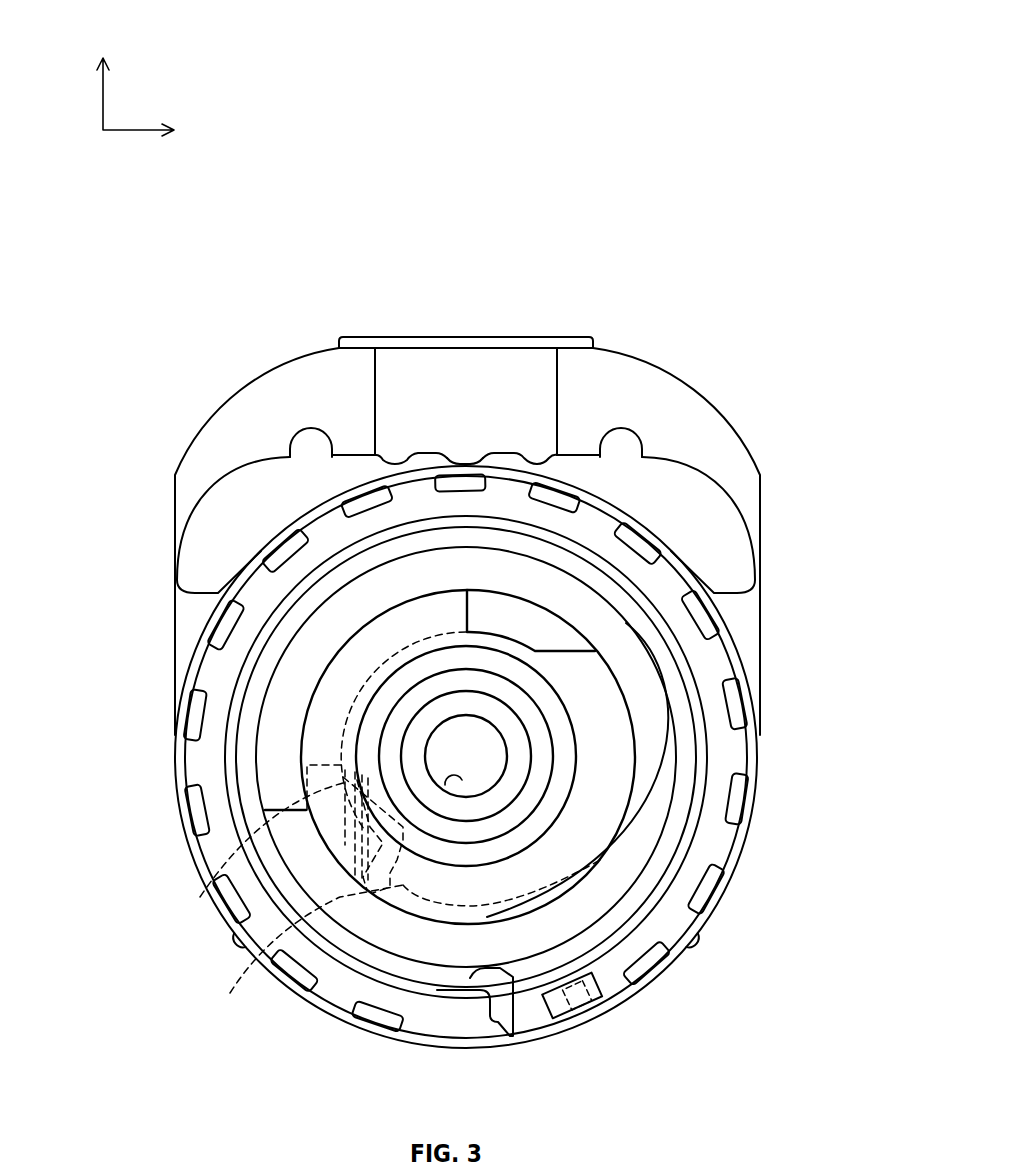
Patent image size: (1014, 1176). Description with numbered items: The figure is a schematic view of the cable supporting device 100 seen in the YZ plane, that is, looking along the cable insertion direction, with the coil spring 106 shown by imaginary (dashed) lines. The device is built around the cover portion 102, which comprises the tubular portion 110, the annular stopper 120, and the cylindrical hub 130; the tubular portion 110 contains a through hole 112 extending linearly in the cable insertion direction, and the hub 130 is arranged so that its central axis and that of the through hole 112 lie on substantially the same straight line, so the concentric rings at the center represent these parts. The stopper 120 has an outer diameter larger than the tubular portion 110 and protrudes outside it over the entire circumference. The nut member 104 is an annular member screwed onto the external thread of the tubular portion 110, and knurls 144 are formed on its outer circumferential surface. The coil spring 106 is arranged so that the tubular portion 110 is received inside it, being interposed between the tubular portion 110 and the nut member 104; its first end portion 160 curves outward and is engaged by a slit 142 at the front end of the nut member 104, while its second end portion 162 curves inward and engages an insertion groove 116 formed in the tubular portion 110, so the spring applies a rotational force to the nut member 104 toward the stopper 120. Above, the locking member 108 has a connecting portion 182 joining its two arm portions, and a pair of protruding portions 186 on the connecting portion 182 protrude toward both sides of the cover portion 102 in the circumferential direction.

The cable supporting device 100 is at (687, 210).
The cover portion 102 is at (590, 757).
The nut member 104 is at (739, 602).
The coil spring 106 is at (350, 880).
The locking member 108 is at (714, 468).
The tubular portion 110 is at (598, 693).
The through hole 112 is at (462, 780).
The insertion groove 116 is at (310, 845).
The stopper 120 is at (775, 677).
The hub 130 is at (556, 808).
The slit 142 is at (540, 978).
The knurls 144 is at (200, 707).
The first end portion 160 is at (575, 1025).
The second end portion 162 is at (292, 800).
The connecting portion 182 is at (471, 463).
The protruding portions 186 is at (207, 547).